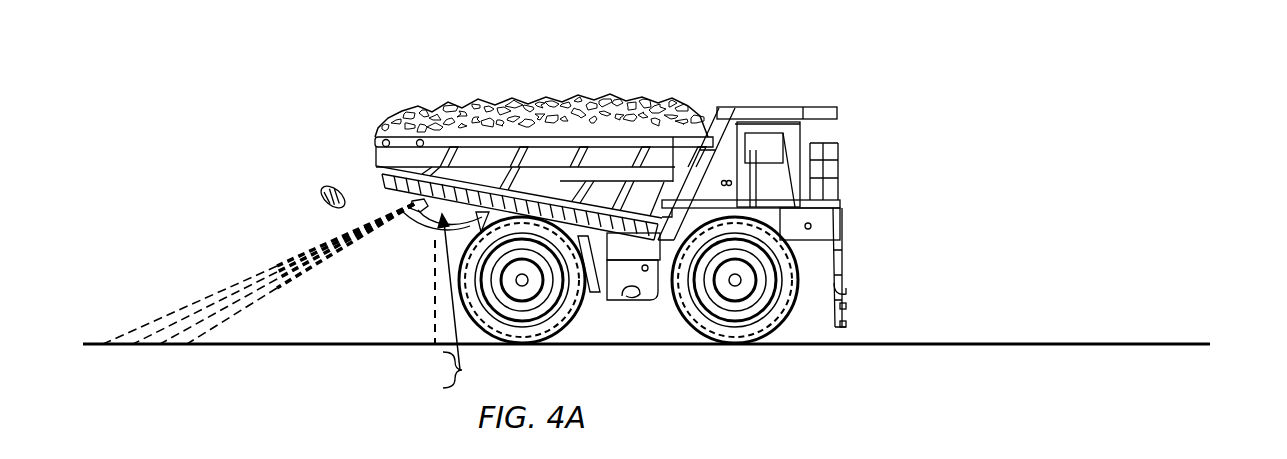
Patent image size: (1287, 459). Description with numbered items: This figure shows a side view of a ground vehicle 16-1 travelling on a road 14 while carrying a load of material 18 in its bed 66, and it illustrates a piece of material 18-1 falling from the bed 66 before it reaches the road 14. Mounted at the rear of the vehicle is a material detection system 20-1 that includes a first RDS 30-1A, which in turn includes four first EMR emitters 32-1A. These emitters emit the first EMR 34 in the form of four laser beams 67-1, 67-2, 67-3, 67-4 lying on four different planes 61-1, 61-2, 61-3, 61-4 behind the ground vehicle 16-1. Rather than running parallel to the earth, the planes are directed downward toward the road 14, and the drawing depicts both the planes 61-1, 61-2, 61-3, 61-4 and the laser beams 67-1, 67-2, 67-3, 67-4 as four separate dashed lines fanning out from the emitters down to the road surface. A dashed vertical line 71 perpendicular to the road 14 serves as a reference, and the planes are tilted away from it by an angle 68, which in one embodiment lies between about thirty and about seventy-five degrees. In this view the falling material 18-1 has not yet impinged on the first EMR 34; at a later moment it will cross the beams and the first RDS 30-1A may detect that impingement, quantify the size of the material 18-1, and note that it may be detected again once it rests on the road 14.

The road 14 is at (382, 343).
The ground vehicle 16-1 is at (815, 107).
The material 18 is at (585, 100).
The material 18-1 is at (333, 186).
The material detection system 20-1 is at (412, 204).
The first RDS 30-1A is at (427, 301).
The first EMR emitters 32-1A is at (427, 370).
The first EMR 34 is at (241, 240).
The first plane 61-1 is at (203, 298).
The second plane 61-2 is at (196, 312).
The third plane 61-3 is at (204, 322).
The fourth plane 61-4 is at (234, 316).
The bed 66 is at (400, 137).
The first laser beam 67-1 is at (318, 247).
The second laser beam 67-2 is at (301, 262).
The third laser beam 67-3 is at (305, 266).
The fourth laser beam 67-4 is at (332, 256).
The angle 68 is at (399, 213).
The line perpendicular to the road 71 is at (435, 303).